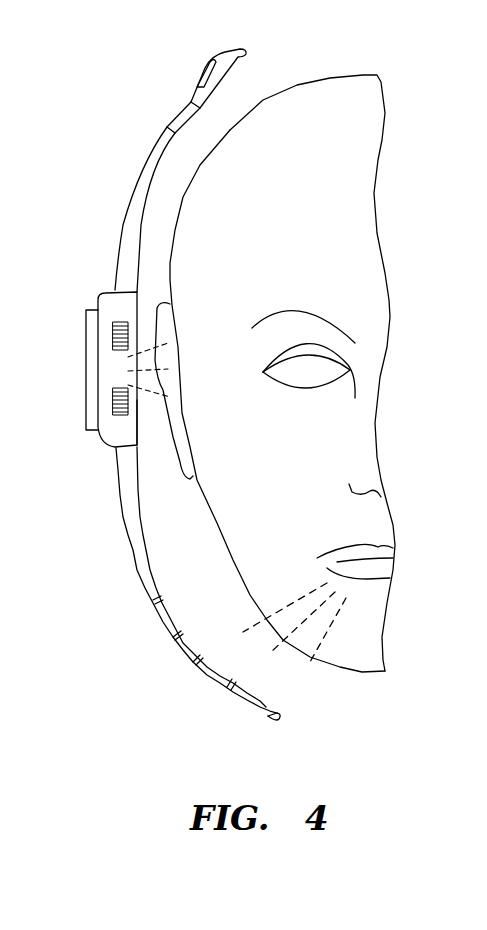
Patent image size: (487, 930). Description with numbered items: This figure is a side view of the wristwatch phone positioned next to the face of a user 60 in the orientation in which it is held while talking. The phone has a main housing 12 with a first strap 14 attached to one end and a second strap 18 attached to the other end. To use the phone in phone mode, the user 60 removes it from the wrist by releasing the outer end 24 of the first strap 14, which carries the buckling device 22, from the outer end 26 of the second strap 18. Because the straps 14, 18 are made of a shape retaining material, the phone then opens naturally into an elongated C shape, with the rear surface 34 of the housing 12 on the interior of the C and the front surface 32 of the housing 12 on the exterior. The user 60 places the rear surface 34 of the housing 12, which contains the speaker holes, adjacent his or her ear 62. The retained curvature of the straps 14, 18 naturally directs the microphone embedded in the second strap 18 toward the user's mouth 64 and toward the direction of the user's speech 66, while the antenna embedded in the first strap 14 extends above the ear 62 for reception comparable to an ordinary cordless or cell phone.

The main housing 12 is at (107, 297).
The first strap 14 is at (123, 233).
The second strap 18 is at (126, 521).
The buckling device 22 is at (243, 53).
The outer end of first strap 24 is at (168, 128).
The outer end of second strap 26 is at (267, 715).
The front surface 32 is at (87, 392).
The rear surface 34 is at (138, 423).
The user 60 is at (370, 287).
The ear 62 is at (167, 318).
The mouth 64 is at (385, 567).
The user's speech 66 is at (338, 609).